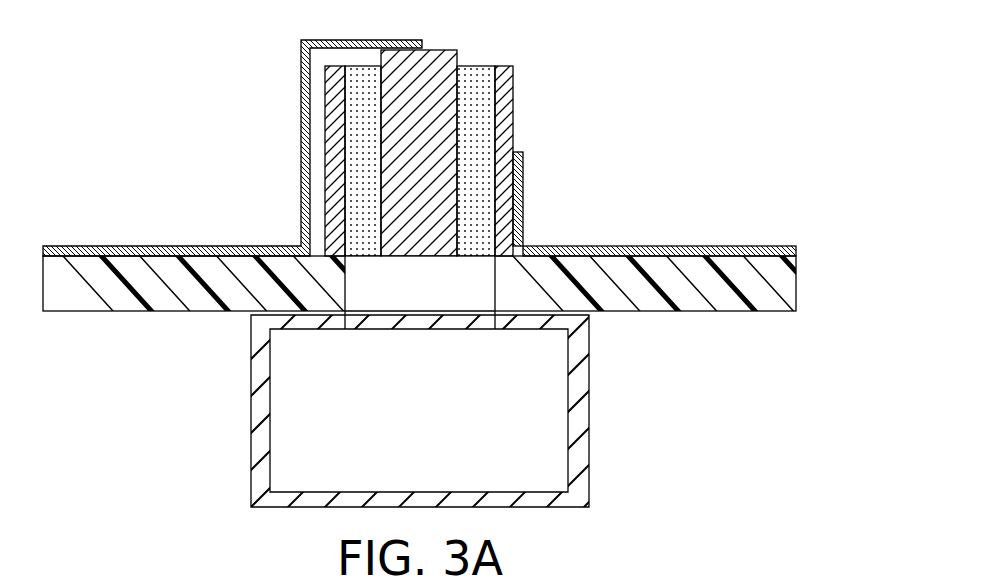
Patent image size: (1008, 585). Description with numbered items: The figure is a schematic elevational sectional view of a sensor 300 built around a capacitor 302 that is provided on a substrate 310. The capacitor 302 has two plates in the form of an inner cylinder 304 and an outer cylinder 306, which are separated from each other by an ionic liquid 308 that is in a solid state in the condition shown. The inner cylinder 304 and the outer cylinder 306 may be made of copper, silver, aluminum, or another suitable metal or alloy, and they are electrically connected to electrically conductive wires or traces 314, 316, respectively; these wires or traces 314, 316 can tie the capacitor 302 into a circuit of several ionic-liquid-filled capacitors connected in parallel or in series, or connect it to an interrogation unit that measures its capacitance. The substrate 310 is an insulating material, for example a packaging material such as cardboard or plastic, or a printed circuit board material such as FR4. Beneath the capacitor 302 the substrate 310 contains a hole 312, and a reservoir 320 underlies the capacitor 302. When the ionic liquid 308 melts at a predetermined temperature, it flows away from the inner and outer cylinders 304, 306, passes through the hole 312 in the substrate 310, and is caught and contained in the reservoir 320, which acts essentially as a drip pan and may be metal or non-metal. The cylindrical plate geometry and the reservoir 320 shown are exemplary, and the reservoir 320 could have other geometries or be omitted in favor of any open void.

The sensor 300 is at (214, 68).
The capacitor 302 is at (478, 129).
The inner cylinder 304 is at (433, 50).
The outer cylinder 306 is at (513, 108).
The ionic liquid 308 is at (473, 66).
The substrate 310 is at (796, 288).
The hole 312 is at (495, 298).
The electrically conductive wire or trace 314 is at (300, 182).
The electrically conductive wire or trace 316 is at (523, 193).
The reservoir 320 is at (589, 375).